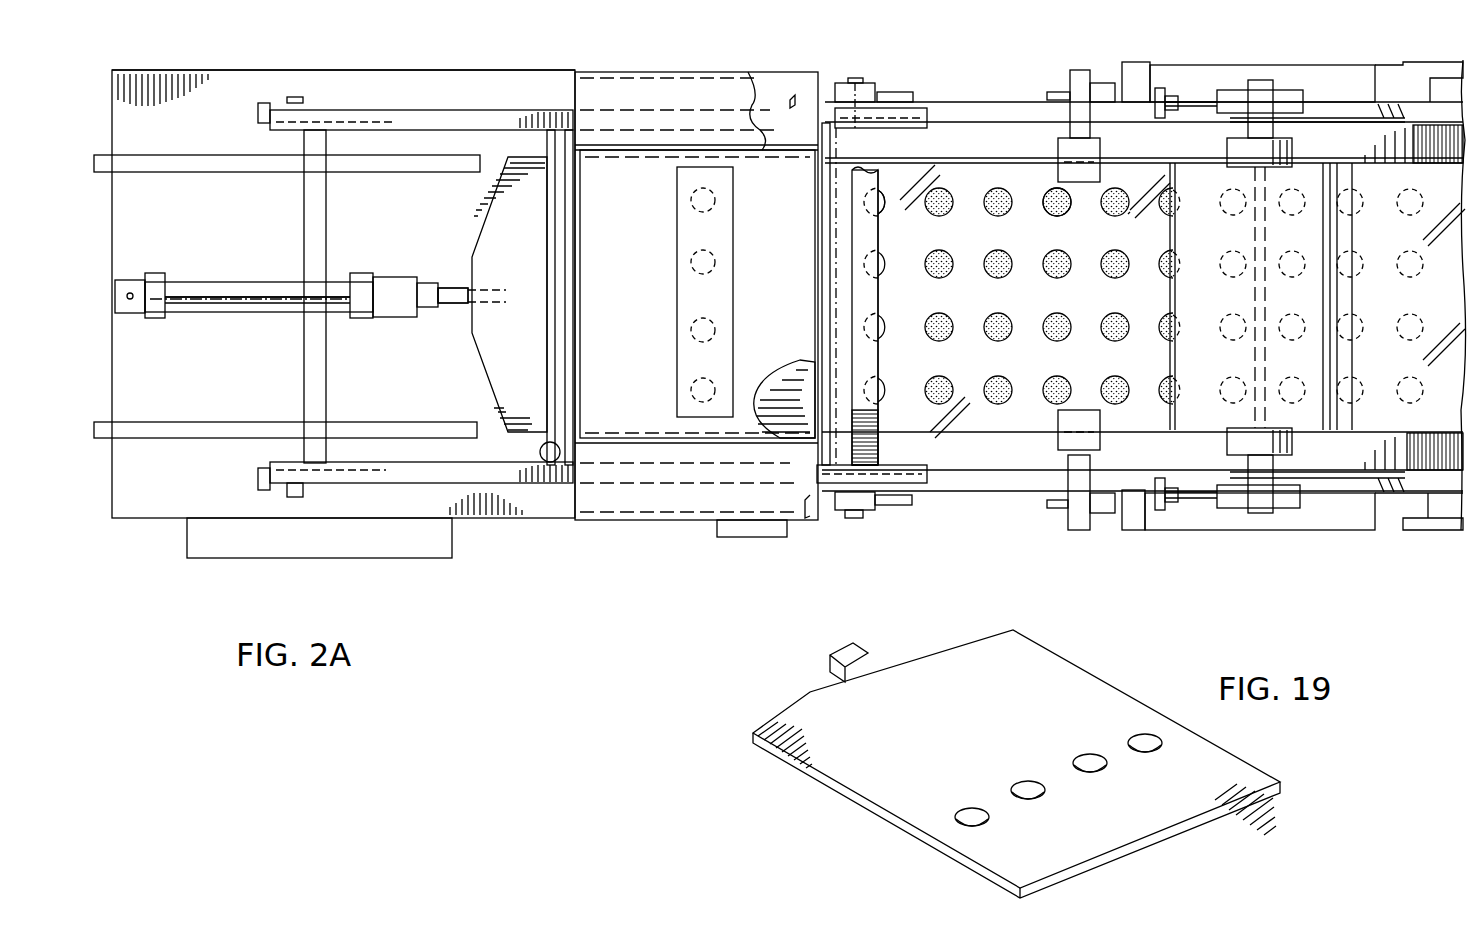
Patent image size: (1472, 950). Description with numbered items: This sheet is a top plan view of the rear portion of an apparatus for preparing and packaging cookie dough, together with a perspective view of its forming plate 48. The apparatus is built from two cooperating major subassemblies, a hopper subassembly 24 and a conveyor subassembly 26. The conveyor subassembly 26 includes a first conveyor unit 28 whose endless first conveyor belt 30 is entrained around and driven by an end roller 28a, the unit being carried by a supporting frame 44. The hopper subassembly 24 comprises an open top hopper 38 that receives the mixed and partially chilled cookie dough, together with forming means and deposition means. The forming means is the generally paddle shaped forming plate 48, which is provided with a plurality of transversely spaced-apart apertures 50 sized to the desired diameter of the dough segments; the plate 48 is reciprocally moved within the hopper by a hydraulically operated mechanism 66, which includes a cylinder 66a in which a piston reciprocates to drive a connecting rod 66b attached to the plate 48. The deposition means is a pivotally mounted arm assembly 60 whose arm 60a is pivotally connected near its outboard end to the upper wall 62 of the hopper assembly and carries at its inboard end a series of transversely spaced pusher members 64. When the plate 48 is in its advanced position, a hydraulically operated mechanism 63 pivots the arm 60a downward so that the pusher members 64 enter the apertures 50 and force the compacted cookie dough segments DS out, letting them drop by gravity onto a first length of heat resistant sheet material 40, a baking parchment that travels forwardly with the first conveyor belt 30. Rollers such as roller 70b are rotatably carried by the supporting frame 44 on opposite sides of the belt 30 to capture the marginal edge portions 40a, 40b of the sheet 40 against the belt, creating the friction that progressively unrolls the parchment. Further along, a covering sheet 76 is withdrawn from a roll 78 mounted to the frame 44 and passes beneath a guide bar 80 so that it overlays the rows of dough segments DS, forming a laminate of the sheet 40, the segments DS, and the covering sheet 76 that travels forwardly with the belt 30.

In FIG. 2A, the hopper subassembly 24 is at (393, 68).
In FIG. 2A, the conveyor subassembly 26 is at (1000, 86).
In FIG. 2A, the first conveyor unit 28 is at (872, 515).
In FIG. 2A, the end roller 28a is at (850, 108).
In FIG. 2A, the first conveyor belt 30 is at (967, 420).
In FIG. 2A, the hopper 38 is at (612, 145).
In FIG. 2A, the first length of heat resistant sheet material 40 is at (838, 298).
In FIG. 2A, the marginal edge portion 40a is at (1023, 430).
In FIG. 2A, the marginal edge portion 40b is at (940, 170).
In FIG. 2A, the supporting frame 44 is at (1025, 108).
In FIG. 2A, the forming plate 48 is at (488, 214).
In FIG. 19, the forming plate 48 is at (818, 790).
In FIG. 2A, the apertures 50 is at (697, 255).
In FIG. 19, the apertures 50 is at (968, 810).
In FIG. 2A, the arm assembly 60 is at (346, 95).
In FIG. 2A, the arm 60a is at (460, 118).
In FIG. 2A, the upper wall 62 is at (343, 314).
In FIG. 2A, the hydraulically operated mechanism 63 is at (540, 450).
In FIG. 2A, the pusher members 64 is at (890, 270).
In FIG. 2A, the hydraulically operated mechanism 66 is at (209, 283).
In FIG. 2A, the cylinder 66a is at (226, 312).
In FIG. 2A, the connecting rod 66b is at (448, 303).
In FIG. 2A, the roller 70b is at (1100, 150).
In FIG. 2A, the covering sheet 76 is at (1401, 296).
In FIG. 2A, the roll of covering material 78 is at (1308, 192).
In FIG. 2A, the guide bar 80 is at (1252, 298).
In FIG. 2A, the cookie dough segments DS is at (1058, 206).